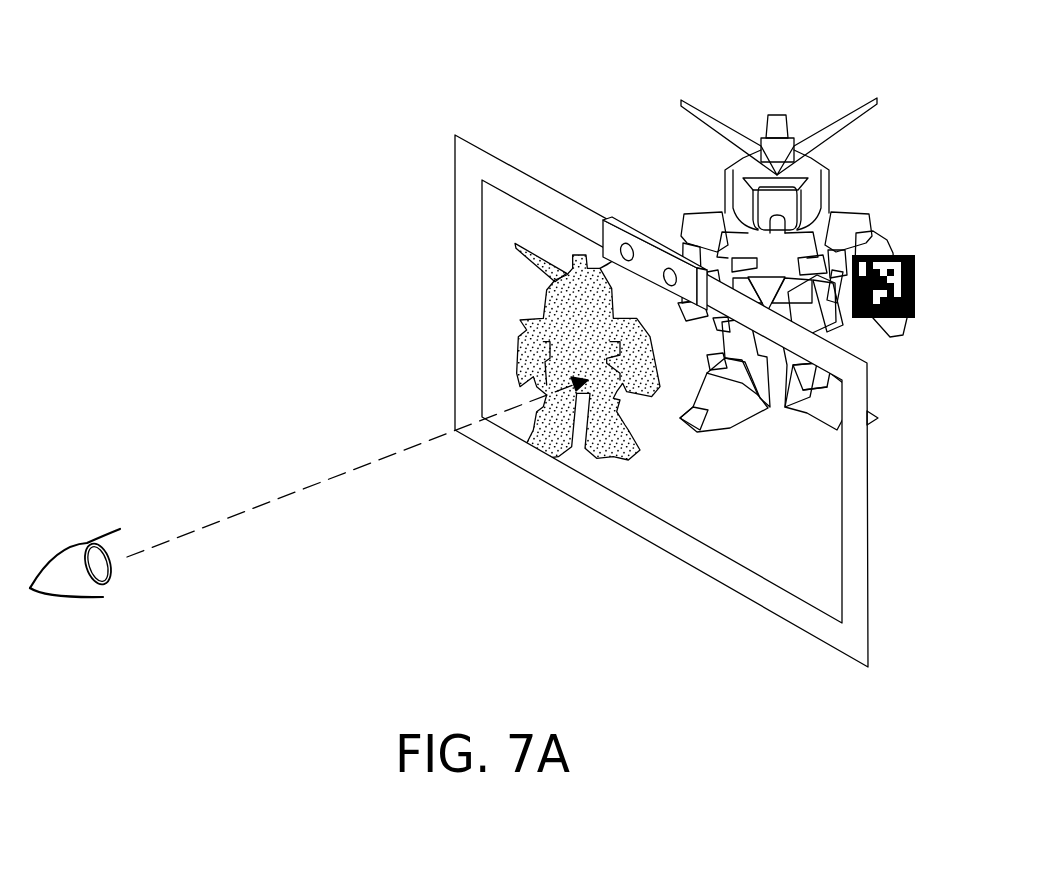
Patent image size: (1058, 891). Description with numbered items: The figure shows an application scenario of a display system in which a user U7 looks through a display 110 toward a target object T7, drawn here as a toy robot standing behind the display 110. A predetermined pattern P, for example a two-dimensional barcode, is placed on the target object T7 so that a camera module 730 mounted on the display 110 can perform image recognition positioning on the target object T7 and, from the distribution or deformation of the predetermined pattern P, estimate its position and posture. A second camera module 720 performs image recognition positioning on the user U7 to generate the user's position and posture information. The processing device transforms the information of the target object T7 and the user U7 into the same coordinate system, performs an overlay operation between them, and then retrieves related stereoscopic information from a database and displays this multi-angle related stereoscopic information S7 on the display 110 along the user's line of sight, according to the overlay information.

The display 110 is at (748, 588).
The camera module 720 is at (607, 237).
The camera module 730 is at (640, 244).
The target object T7 is at (713, 122).
The predetermined pattern P is at (910, 250).
The related stereoscopic information S7 is at (603, 443).
The user U7 is at (67, 600).